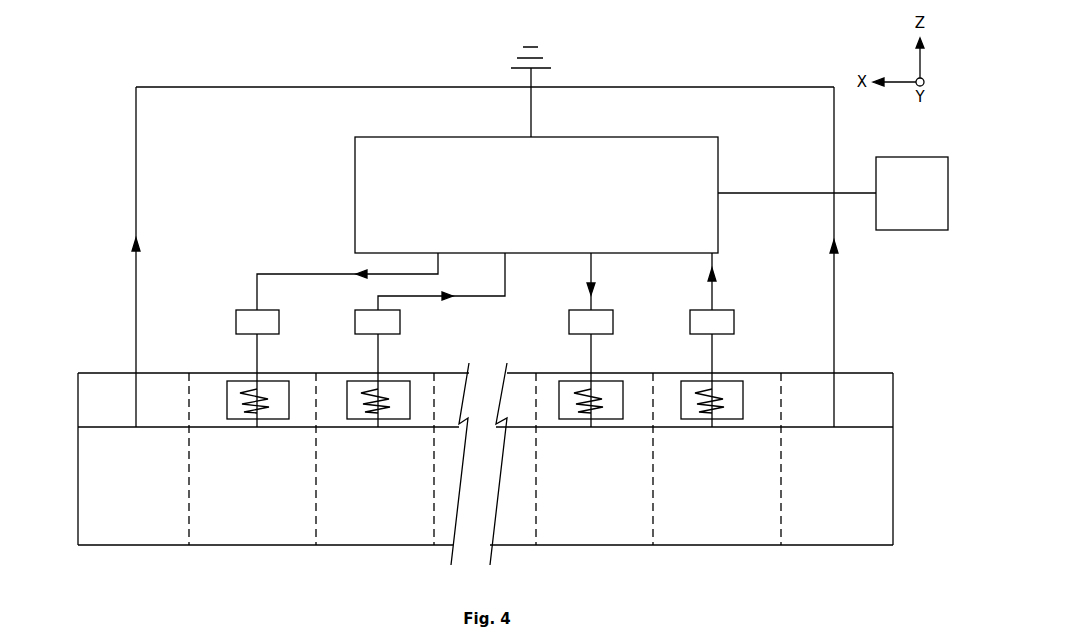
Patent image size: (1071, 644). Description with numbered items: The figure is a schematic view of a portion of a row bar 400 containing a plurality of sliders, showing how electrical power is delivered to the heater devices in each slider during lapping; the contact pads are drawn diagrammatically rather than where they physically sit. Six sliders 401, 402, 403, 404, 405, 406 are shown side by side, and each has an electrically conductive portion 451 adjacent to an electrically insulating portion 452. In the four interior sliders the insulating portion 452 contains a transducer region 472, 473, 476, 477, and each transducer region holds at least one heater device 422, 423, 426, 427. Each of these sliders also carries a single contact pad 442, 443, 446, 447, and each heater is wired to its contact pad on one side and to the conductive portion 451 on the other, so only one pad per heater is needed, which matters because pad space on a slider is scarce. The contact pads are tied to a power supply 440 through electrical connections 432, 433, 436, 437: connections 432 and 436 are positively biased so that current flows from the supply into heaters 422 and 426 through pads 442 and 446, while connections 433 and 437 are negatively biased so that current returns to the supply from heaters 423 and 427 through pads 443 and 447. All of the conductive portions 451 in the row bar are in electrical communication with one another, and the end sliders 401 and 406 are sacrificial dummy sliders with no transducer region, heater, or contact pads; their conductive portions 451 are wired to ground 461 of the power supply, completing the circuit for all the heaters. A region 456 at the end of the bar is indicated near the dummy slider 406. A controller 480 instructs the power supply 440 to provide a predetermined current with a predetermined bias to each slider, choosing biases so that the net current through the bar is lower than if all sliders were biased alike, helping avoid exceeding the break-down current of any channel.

The row bar 400 is at (62, 462).
The dummy slider 401 is at (134, 536).
The slider 402 is at (249, 536).
The slider 403 is at (364, 536).
The slider 404 is at (608, 536).
The slider 405 is at (719, 536).
The dummy slider 406 is at (839, 536).
The heater device 422 is at (260, 398).
The heater device 423 is at (381, 398).
The heater device 426 is at (593, 398).
The heater device 427 is at (714, 398).
The electrical connection 432 is at (301, 274).
The electrical connection 433 is at (480, 296).
The electrical connection 436 is at (591, 270).
The electrical connection 437 is at (714, 282).
The power supply 440 is at (536, 195).
The contact pad 442 is at (279, 323).
The contact pad 443 is at (400, 323).
The contact pad 446 is at (613, 323).
The contact pad 447 is at (734, 323).
The electrically conductive portion 451 is at (485, 486).
The electrically insulating portion 452 is at (105, 378).
The ground connection region 456 is at (870, 372).
The ground 461 is at (557, 48).
The transducer region 472 is at (290, 395).
The transducer region 473 is at (411, 395).
The transducer region 476 is at (624, 395).
The transducer region 477 is at (744, 395).
The controller 480 is at (833, 193).